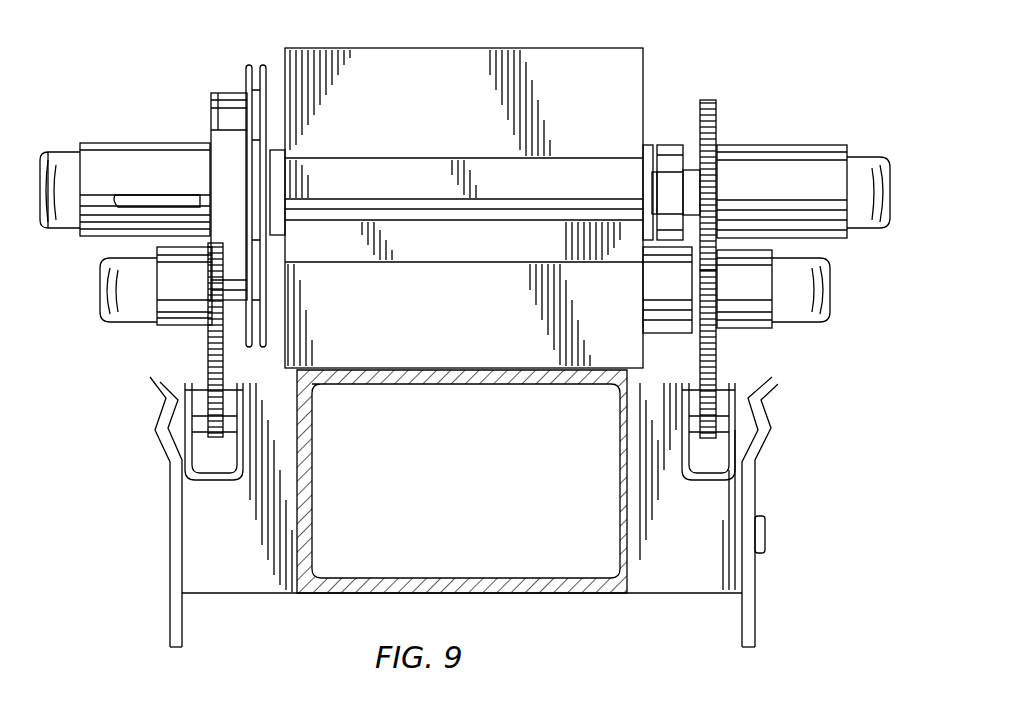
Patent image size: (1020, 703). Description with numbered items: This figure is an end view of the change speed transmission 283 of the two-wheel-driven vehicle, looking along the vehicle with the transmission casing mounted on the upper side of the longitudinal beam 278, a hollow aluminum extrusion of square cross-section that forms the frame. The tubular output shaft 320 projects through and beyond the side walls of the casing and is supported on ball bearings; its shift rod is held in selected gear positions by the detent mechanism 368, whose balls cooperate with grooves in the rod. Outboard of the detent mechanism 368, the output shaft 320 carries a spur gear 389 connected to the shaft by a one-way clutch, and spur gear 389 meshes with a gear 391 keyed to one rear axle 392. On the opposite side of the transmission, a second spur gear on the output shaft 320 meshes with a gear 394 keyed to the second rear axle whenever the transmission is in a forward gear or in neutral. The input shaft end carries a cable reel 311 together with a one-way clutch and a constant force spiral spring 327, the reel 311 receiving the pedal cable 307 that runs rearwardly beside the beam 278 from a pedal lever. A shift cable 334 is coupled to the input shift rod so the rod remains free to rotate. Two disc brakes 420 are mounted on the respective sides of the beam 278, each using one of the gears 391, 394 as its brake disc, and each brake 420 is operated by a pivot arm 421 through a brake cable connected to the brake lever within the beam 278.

The longitudinal beam 278 is at (333, 594).
The transmission 283 is at (566, 50).
The cable 307 is at (254, 66).
The cable reel 311 is at (247, 80).
The tubular output shaft 320 is at (726, 150).
The constant force spiral spring 327 is at (125, 262).
The shift cable 334 is at (135, 198).
The detent mechanism 368 is at (670, 144).
The spur gear 389 is at (716, 100).
The gear 391 is at (718, 362).
The rear axle 392 is at (830, 282).
The gear 394 is at (208, 352).
The disc brake 420 is at (144, 399).
The pivot arm 421 is at (750, 628).